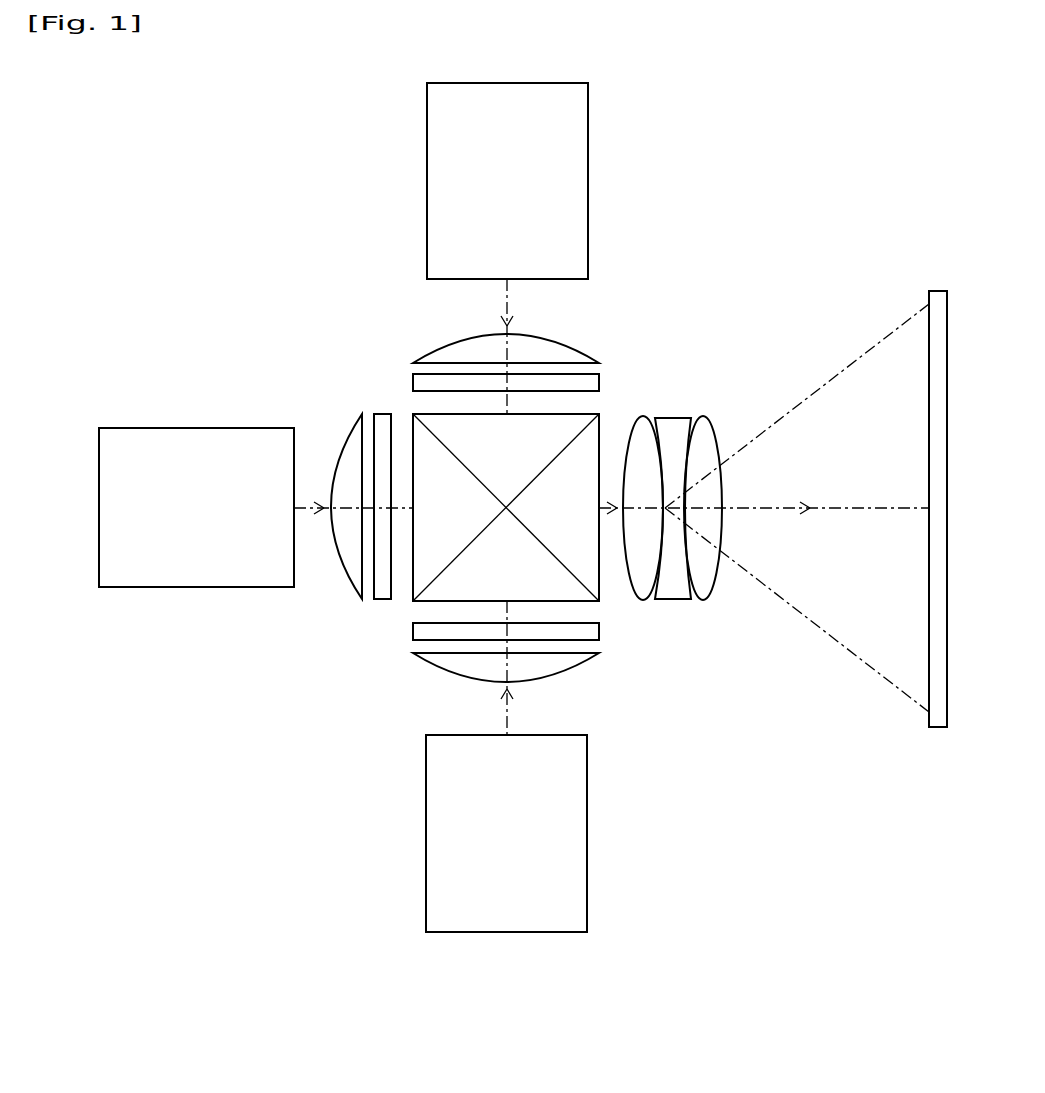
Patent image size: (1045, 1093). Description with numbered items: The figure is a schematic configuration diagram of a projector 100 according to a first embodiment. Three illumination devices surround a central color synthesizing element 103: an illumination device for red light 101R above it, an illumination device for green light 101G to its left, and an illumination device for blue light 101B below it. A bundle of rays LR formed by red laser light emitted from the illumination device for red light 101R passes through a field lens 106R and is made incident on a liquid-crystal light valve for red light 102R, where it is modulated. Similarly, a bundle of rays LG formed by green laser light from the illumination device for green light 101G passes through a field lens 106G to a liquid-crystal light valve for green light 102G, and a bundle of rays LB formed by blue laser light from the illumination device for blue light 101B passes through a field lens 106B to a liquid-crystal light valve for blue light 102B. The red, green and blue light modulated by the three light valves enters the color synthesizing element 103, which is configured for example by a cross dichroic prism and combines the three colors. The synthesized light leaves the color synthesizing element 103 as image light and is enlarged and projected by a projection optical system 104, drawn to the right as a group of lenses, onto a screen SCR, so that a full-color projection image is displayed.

The projector 100 is at (312, 258).
The illumination device for red light 101R is at (588, 154).
The illumination device for green light 101G is at (231, 428).
The illumination device for blue light 101B is at (572, 813).
The liquid-crystal light valve for red light 102R is at (415, 380).
The liquid-crystal light valve for green light 102G is at (384, 598).
The liquid-crystal light valve for blue light 102B is at (597, 633).
The color synthesizing element 103 is at (583, 420).
The projection optical system 104 is at (718, 404).
The field lens 106R is at (440, 352).
The field lens 106G is at (353, 572).
The field lens 106B is at (570, 665).
The bundle of rays LR is at (510, 297).
The bundle of rays LG is at (296, 505).
The bundle of rays LB is at (505, 718).
The screen SCR is at (938, 296).